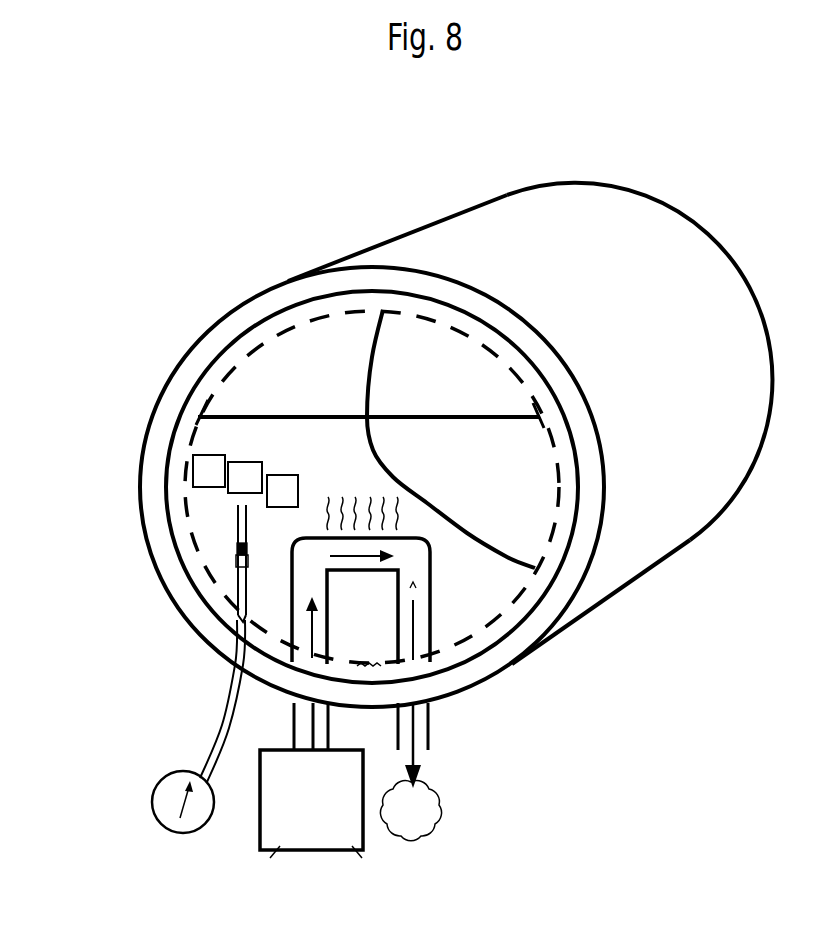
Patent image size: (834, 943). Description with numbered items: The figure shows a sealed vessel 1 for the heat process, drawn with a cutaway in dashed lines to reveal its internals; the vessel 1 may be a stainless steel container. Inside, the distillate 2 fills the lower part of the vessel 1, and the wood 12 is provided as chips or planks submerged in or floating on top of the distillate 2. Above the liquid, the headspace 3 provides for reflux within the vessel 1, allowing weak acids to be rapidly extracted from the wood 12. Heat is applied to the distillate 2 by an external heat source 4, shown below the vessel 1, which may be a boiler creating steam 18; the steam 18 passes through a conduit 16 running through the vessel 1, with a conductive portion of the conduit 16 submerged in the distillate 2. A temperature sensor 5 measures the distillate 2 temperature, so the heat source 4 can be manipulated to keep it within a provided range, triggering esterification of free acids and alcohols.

The vessel 1 is at (648, 292).
The distillate 2 is at (230, 438).
The headspace 3 is at (367, 323).
The heat source 4 is at (315, 853).
The temperature sensor 5 is at (238, 560).
The wood 12 is at (197, 475).
The conduit 16 is at (407, 547).
The steam 18 is at (435, 822).